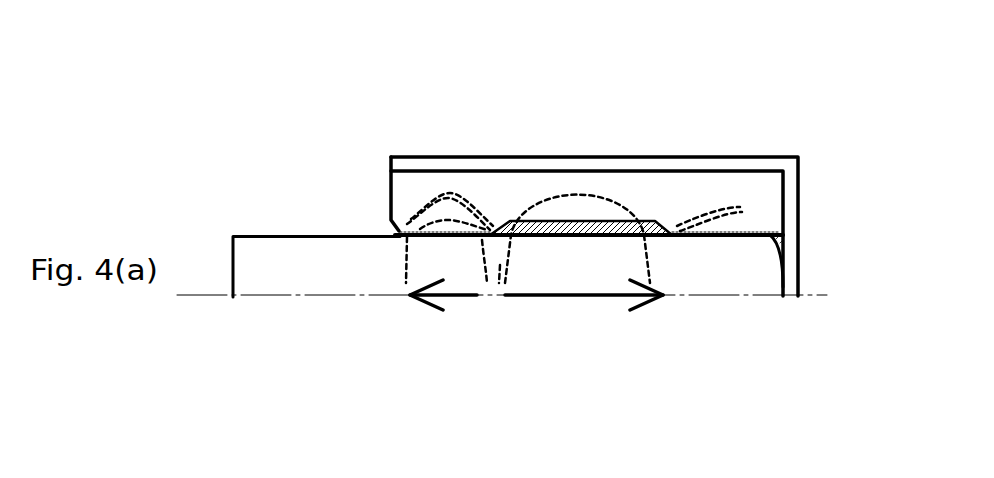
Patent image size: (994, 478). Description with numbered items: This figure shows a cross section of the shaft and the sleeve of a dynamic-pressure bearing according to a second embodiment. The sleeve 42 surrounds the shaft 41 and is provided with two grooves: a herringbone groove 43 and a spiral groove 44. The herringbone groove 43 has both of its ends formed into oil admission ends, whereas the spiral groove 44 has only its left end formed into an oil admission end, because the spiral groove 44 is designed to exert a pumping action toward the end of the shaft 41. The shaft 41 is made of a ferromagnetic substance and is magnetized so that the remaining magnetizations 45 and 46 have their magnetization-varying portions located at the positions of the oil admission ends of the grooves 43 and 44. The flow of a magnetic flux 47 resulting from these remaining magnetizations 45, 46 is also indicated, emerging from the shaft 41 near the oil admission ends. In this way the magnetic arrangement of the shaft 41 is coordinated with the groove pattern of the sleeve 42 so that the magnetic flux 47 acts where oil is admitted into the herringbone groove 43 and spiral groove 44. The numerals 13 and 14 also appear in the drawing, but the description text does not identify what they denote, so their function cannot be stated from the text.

The outer cover 13 is at (747, 157).
The element 14 is at (547, 228).
The shaft 41 is at (310, 260).
The sleeve 42 is at (658, 190).
The herringbone groove 43 is at (423, 217).
The spiral groove 44 is at (740, 208).
The magnetization 45 is at (450, 295).
The magnetization 46 is at (570, 295).
The flow of a magnetic flux 47 is at (405, 265).